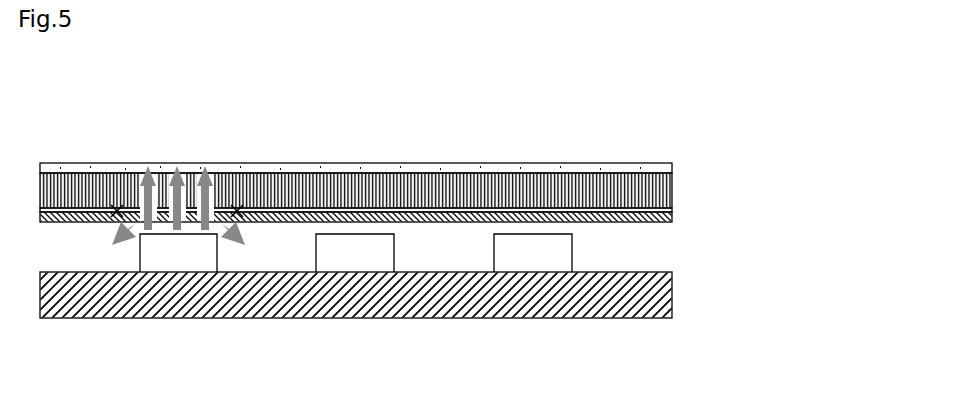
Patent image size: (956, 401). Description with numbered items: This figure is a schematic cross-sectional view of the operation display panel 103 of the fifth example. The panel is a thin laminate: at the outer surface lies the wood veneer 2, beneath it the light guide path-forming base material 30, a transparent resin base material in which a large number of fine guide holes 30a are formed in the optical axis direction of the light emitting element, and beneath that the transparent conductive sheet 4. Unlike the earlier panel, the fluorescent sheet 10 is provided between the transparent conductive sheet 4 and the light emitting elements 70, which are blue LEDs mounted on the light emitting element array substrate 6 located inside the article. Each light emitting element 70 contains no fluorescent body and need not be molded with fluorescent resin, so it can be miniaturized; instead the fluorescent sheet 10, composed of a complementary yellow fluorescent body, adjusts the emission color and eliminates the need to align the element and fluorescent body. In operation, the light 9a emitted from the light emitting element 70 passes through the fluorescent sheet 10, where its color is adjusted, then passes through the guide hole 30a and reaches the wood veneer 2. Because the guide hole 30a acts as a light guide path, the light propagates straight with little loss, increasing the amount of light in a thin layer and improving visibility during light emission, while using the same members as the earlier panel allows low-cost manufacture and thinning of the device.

The operation display panel 103 is at (877, 103).
The wood veneer 2 is at (672, 164).
The light guide path-forming base material 30 is at (672, 190).
The guide hole 30a is at (533, 190).
The transparent conductive sheet 4 is at (672, 209).
The fluorescent sheet 10 is at (672, 218).
The light 9a is at (177, 215).
The light emitting element 70 is at (572, 244).
The light emitting element array substrate 6 is at (672, 296).